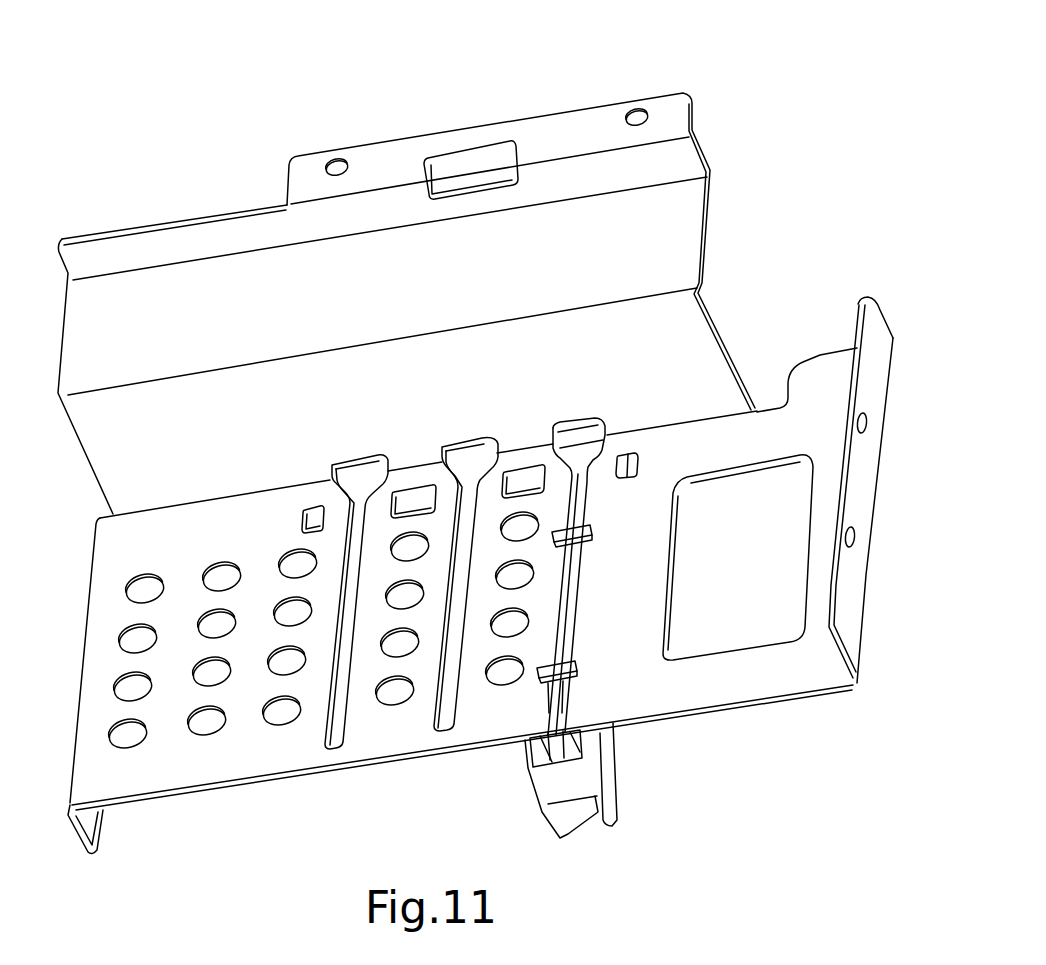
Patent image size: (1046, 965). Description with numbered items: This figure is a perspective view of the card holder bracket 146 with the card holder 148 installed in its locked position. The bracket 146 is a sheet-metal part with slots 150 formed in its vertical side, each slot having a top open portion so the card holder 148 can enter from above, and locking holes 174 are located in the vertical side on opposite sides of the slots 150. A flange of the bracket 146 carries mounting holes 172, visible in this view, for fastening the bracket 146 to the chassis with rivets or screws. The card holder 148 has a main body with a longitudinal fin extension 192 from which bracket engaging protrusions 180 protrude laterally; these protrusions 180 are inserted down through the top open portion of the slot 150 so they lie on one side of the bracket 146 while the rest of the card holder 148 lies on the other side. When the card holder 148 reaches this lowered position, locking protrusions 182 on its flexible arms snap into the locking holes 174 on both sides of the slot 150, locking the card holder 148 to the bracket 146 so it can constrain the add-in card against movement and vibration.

The bracket 146 is at (529, 111).
The card holder 148 is at (638, 754).
The slots 150 is at (545, 713).
The mounting holes 172 is at (861, 428).
The locking holes 174 is at (313, 517).
The bracket engaging protrusions 180 is at (560, 541).
The locking protrusions 182 is at (540, 480).
The longitudinal fin extension 192 is at (562, 611).